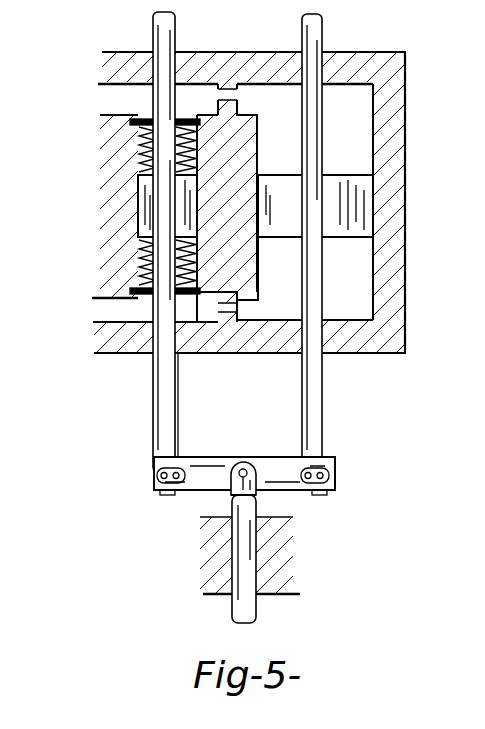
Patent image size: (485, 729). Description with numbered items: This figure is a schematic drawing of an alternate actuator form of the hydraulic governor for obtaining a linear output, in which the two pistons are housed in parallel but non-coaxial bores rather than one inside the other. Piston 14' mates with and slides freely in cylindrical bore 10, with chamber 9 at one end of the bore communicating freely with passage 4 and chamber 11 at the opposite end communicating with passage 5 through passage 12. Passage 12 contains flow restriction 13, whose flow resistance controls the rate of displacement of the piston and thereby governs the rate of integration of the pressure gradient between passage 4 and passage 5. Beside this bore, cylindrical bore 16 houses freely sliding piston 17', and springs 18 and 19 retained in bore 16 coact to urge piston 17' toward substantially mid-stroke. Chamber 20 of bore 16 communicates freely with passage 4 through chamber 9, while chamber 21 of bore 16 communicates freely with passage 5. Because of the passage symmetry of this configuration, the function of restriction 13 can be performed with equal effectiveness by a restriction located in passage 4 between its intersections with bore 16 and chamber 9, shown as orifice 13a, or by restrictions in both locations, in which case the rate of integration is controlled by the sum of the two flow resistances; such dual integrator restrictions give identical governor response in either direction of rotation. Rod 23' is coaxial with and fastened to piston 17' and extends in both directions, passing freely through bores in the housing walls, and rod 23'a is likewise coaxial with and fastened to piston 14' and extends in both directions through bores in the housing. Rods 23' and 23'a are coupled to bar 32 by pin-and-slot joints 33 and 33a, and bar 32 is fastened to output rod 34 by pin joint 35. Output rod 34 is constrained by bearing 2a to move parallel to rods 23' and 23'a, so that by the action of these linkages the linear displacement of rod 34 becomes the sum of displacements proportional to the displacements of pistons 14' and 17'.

The bearing 2a is at (280, 596).
The passage 4 is at (86, 330).
The passage 5 is at (122, 102).
The chamber 9 is at (360, 306).
The cylindrical bore 10 is at (257, 267).
The chamber 11 is at (361, 114).
The passage 12 is at (192, 97).
The flow restriction 13 is at (239, 99).
The orifice 13a is at (239, 308).
The piston 14' is at (317, 189).
The cylindrical bore 16 is at (140, 268).
The piston 17' is at (118, 206).
The spring 18 is at (138, 284).
The spring 19 is at (135, 133).
The chamber 20 is at (118, 318).
The chamber 21 is at (140, 176).
The rod 23' is at (198, 242).
The rod 23'a is at (355, 243).
The bar 32 is at (274, 455).
The pin-and-slot joint 33 is at (150, 471).
The pin-and-slot joint 33a is at (337, 471).
The output rod 34 is at (257, 500).
The pin joint 35 is at (216, 497).